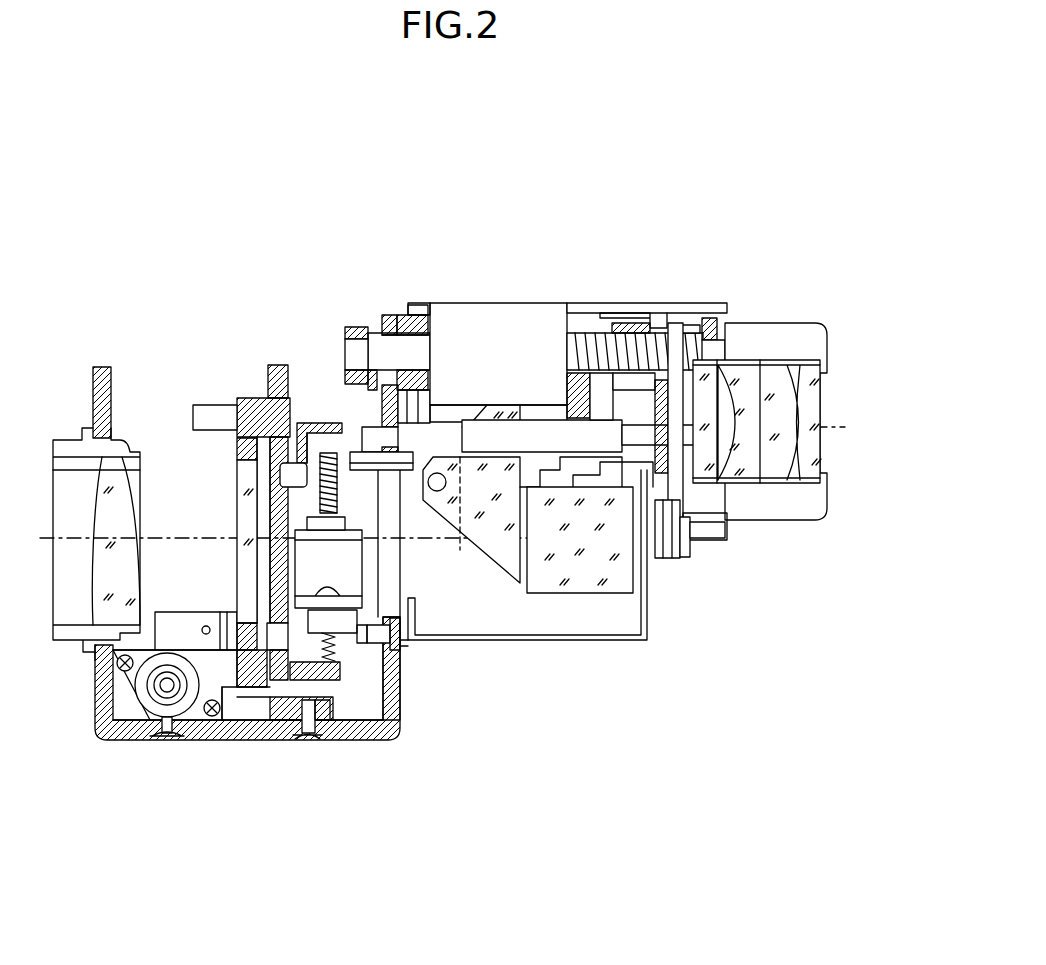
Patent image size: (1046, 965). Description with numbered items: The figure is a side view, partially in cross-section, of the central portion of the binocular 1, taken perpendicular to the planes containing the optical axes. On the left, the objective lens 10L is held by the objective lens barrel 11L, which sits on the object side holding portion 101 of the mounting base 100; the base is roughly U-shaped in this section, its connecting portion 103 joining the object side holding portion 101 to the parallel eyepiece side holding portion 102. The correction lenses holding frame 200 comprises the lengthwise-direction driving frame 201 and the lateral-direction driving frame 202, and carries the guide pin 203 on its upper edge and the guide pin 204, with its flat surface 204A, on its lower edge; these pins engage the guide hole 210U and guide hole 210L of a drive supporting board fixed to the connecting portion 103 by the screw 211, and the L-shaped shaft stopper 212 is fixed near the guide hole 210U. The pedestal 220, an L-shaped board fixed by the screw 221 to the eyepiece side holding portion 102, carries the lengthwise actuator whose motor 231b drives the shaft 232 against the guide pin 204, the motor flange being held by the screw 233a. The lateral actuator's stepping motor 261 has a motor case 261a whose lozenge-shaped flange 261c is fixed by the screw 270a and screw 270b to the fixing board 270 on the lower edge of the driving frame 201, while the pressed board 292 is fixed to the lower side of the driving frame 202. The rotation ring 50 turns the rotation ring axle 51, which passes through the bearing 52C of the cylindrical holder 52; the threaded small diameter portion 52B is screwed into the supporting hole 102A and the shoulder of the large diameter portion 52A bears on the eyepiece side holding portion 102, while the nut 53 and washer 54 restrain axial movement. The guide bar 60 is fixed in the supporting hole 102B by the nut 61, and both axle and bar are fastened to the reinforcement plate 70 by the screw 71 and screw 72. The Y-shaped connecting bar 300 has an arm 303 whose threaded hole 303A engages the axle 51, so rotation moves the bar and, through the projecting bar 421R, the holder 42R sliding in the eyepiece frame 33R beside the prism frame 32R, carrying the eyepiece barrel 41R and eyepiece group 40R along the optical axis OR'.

The binocular 1 is at (588, 756).
The objective lens 10L is at (118, 512).
The objective lens barrel 11L is at (58, 440).
The object side holding portion 101 is at (95, 367).
The mounting base 100 is at (417, 742).
The eyepiece side holding portion 102 is at (398, 672).
The supporting hole 102A is at (392, 314).
The supporting hole 102B is at (398, 460).
The connecting portion 103 is at (337, 722).
The correction lenses holding frame 200 is at (224, 396).
The lengthwise-direction driving frame 201 is at (255, 722).
The lateral-direction driving frame 202 is at (237, 449).
The guide pin 203 is at (287, 370).
The guide pin 204 is at (330, 695).
The flat surface 204A is at (395, 722).
The guide hole 210U is at (282, 386).
The guide hole 210L is at (263, 730).
The screw 211 is at (306, 722).
The shaft stopper 212 is at (312, 422).
The pedestal 220 is at (410, 600).
The screw 221 is at (402, 642).
The motor 231b is at (380, 652).
The shaft 232 is at (388, 697).
The screw 233a is at (335, 586).
The stepping motor 261 is at (125, 722).
The motor case 261a is at (135, 740).
The flange 261c is at (122, 672).
The fixing board 270 is at (248, 692).
The screw 270a is at (100, 660).
The screw 270b is at (230, 690).
The pressed board 292 is at (185, 622).
The rotation ring 50 is at (525, 312).
The rotation ring axle 51 is at (582, 333).
The holder 52 is at (421, 262).
The large diameter portion 52A is at (418, 314).
The small diameter portion 52B is at (376, 314).
The bearing 52C is at (434, 352).
The nut 53 is at (348, 328).
The washer 54 is at (362, 316).
The guide bar 60 is at (538, 440).
The nut 61 is at (370, 420).
The connecting bar 300 is at (637, 408).
The arm 303 is at (630, 323).
The hole 303A is at (664, 338).
The prism frame 32R is at (598, 333).
The eyepiece frame 33R is at (668, 330).
The holder 42R is at (697, 325).
The projecting bar 421R is at (678, 560).
The eyepiece group 40R is at (826, 398).
The eyepiece barrel 41R is at (822, 336).
The reinforcement plate 70 is at (722, 338).
The screw 71 is at (727, 352).
The screw 72 is at (724, 365).
The optical axis OR' is at (871, 458).